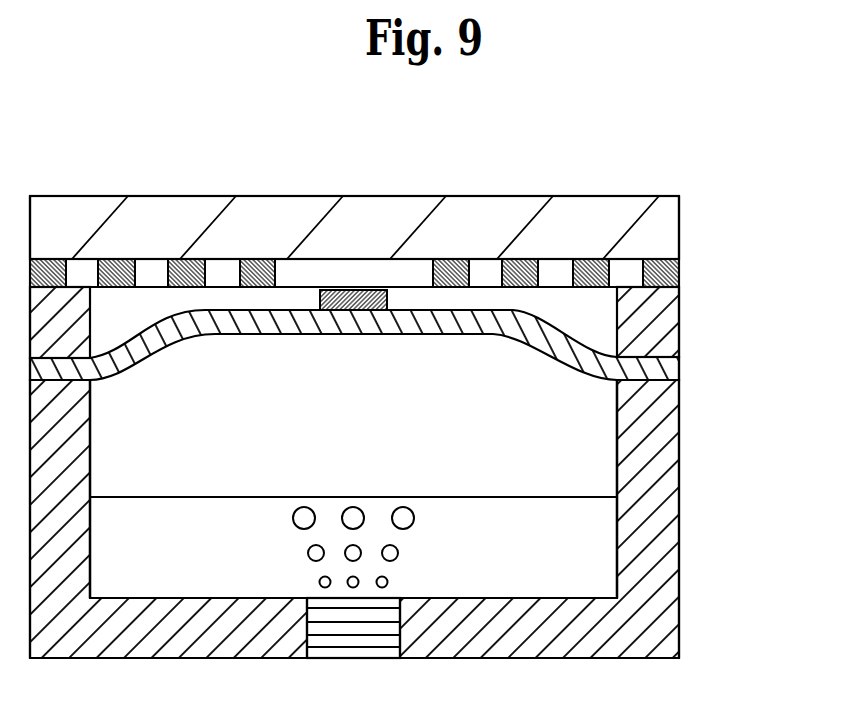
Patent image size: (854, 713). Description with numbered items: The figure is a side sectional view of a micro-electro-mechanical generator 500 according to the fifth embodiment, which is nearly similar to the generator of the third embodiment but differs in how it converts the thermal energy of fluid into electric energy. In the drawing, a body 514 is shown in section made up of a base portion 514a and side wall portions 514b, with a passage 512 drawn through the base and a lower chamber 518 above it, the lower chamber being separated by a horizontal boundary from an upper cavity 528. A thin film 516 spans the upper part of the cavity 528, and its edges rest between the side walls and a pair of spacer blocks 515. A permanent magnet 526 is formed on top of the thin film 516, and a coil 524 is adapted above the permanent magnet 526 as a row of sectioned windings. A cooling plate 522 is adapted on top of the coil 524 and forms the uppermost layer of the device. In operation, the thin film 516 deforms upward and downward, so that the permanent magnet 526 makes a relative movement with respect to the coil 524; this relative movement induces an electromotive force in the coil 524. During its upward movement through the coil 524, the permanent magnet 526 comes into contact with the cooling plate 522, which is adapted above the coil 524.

The micro-electro-mechanical generator 500 is at (632, 188).
The ink supply passage / filter 512 is at (352, 640).
The chamber body 514 is at (776, 621).
The chamber body base plate 514a is at (586, 638).
The chamber body side walls 514b is at (642, 557).
The spacer 515 is at (658, 325).
The thin film 516 is at (658, 369).
The lower ink chamber 518 is at (577, 558).
The cooling plate 522 is at (648, 229).
The coil 524 is at (679, 270).
The permanent magnet 526 is at (358, 290).
The pressure chamber / cavity 528 is at (583, 445).